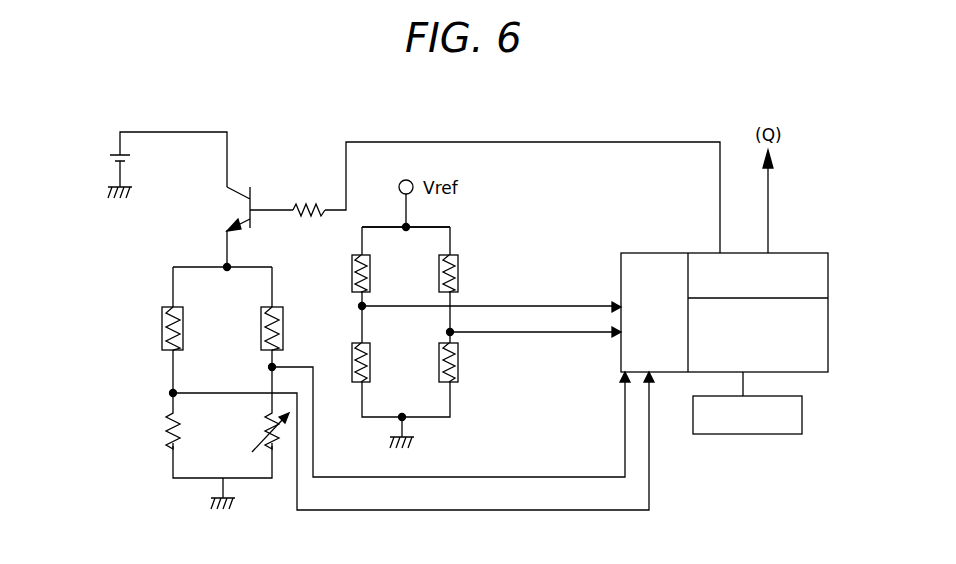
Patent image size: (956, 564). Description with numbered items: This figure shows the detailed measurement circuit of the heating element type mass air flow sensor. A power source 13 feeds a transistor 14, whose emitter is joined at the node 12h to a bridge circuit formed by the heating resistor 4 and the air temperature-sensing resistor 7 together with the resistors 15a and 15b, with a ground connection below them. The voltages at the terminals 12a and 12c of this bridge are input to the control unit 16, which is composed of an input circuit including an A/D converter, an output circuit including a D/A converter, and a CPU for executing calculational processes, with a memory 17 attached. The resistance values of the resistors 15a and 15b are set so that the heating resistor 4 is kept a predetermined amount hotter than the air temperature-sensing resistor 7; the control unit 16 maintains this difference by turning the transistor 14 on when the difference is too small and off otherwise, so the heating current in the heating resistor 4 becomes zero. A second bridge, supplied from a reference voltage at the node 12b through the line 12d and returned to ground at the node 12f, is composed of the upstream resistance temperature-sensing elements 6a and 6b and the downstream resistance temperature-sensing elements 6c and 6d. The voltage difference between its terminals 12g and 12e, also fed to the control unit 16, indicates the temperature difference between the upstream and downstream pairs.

The power source 13 is at (108, 153).
The transistor 14 is at (256, 196).
The connection node 12h is at (224, 264).
The heating resistor 4 is at (161, 320).
The air temperature-sensing resistor 7 is at (260, 320).
The terminal 12c is at (170, 391).
The terminal 12a is at (269, 368).
The resistor 15a is at (167, 444).
The resistor 15b is at (282, 452).
The upstream resistance temperature-sensing element 6a is at (353, 264).
The downstream resistance temperature-sensing element 6d is at (458, 274).
The downstream resistance temperature-sensing element 6c is at (370, 370).
The upstream resistance temperature-sensing element 6b is at (458, 366).
The connection node 12b is at (410, 226).
The connection line 12d is at (410, 228).
The terminal 12g is at (358, 306).
The terminal 12e is at (452, 331).
The connection node 12f is at (408, 418).
The control unit 16 is at (679, 253).
The memory 17 is at (745, 434).